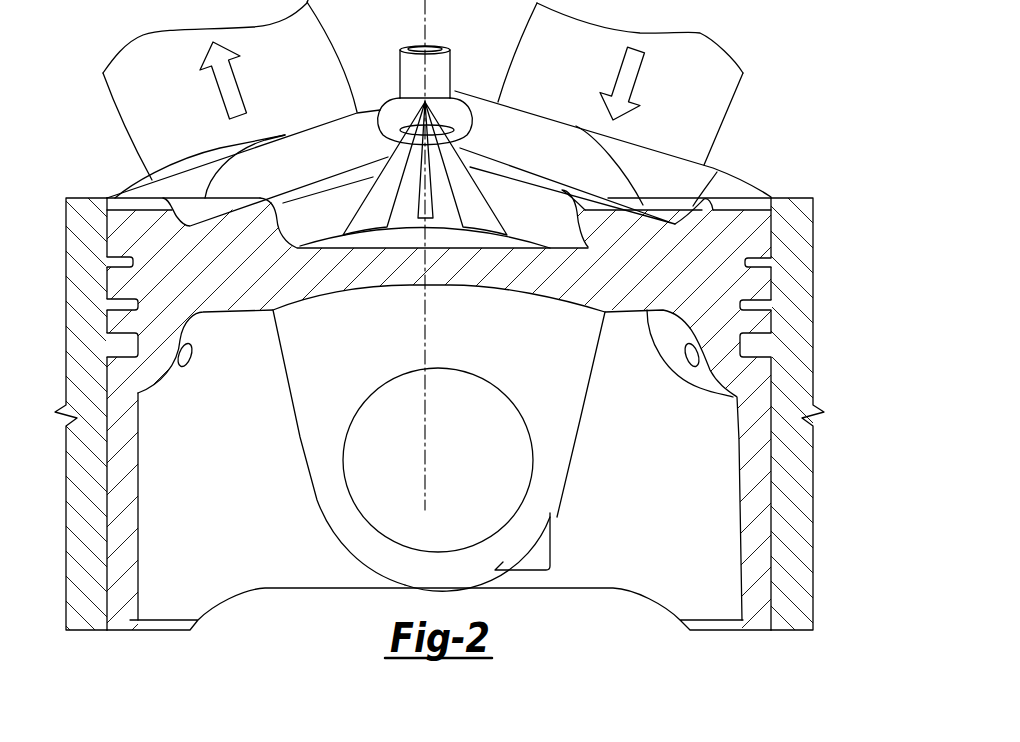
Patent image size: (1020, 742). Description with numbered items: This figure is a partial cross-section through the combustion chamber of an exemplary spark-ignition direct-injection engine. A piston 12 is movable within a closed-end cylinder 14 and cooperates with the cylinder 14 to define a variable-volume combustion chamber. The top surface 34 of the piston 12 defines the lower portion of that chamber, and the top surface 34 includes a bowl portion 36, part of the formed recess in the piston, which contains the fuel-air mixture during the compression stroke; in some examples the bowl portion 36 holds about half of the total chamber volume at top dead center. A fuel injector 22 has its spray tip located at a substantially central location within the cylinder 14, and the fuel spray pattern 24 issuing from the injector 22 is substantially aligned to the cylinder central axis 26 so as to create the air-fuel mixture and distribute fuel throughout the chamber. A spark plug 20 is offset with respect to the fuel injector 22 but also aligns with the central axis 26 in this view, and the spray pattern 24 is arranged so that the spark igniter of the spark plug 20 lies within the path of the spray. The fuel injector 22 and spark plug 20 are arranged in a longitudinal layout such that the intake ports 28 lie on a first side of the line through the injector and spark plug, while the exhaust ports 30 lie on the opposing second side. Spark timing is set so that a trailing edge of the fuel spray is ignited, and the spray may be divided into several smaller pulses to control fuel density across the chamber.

The piston 12 is at (135, 276).
The cylinder 14 is at (770, 538).
The spark plug 20 is at (468, 130).
The fuel injector 22 is at (452, 72).
The fuel spray pattern 24 is at (395, 186).
The cylinder central axis 26 is at (424, 14).
The intake ports 28 is at (668, 152).
The exhaust ports 30 is at (146, 182).
The top surface 34 is at (733, 204).
The bowl portion 36 is at (348, 213).